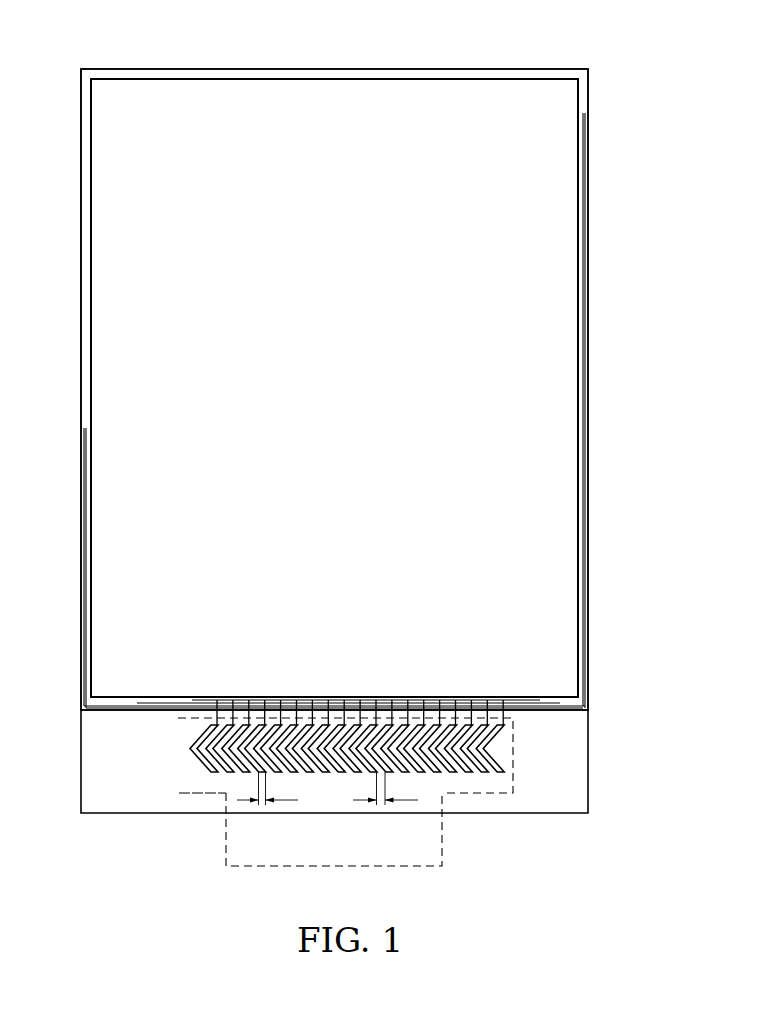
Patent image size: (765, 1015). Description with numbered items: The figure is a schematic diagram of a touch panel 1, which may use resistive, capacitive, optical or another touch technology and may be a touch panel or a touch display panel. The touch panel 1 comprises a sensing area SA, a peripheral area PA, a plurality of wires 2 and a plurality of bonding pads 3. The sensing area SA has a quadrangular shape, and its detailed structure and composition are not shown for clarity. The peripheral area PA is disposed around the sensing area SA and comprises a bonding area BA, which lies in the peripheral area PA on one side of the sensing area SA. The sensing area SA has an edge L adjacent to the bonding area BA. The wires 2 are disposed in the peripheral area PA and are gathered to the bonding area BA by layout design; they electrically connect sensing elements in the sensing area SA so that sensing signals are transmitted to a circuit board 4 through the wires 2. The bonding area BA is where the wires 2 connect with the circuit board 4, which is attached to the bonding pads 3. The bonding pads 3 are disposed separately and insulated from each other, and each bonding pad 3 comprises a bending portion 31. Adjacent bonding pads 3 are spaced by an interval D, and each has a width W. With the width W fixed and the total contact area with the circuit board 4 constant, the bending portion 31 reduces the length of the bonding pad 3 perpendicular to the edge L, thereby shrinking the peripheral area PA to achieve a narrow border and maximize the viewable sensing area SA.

The touch panel 1 is at (116, 31).
The wires 2 is at (583, 667).
The sensing area SA is at (538, 92).
The peripheral area PA is at (586, 97).
The edge L is at (567, 698).
The bonding area BA is at (577, 787).
The bonding pads 3 is at (196, 764).
The bending portion 31 is at (492, 745).
The circuit board 4 is at (442, 842).
The width W is at (267, 788).
The interval D is at (385, 788).